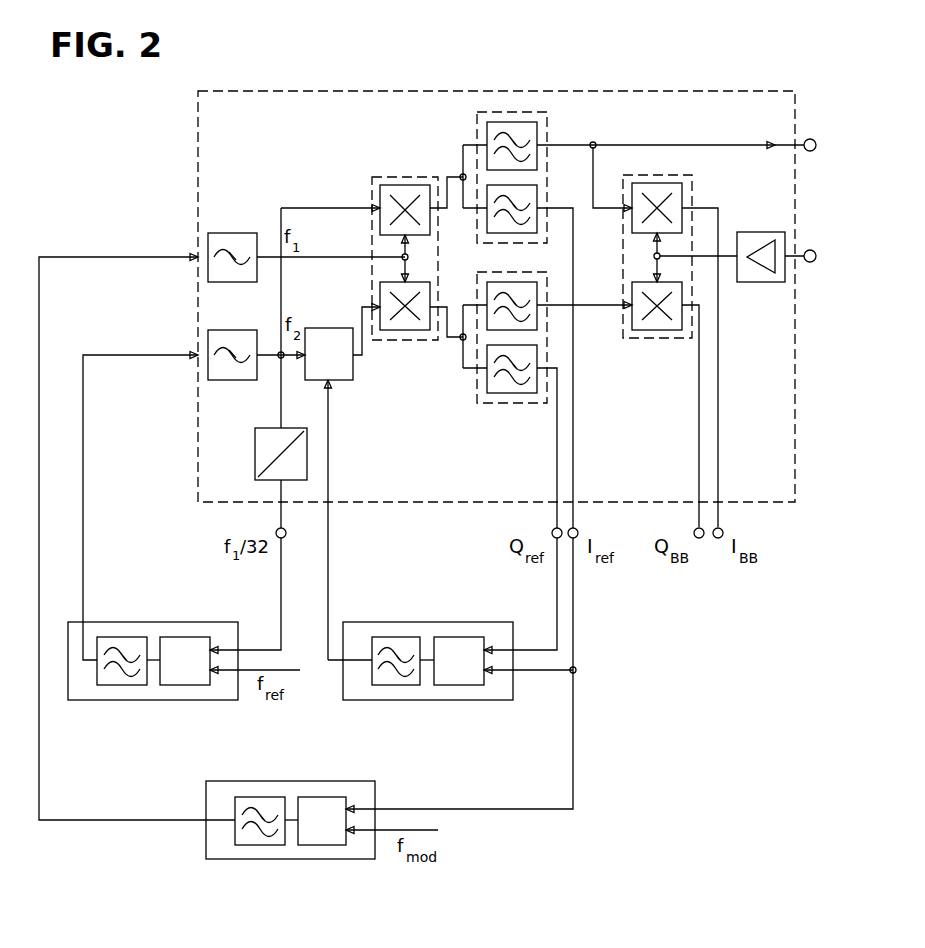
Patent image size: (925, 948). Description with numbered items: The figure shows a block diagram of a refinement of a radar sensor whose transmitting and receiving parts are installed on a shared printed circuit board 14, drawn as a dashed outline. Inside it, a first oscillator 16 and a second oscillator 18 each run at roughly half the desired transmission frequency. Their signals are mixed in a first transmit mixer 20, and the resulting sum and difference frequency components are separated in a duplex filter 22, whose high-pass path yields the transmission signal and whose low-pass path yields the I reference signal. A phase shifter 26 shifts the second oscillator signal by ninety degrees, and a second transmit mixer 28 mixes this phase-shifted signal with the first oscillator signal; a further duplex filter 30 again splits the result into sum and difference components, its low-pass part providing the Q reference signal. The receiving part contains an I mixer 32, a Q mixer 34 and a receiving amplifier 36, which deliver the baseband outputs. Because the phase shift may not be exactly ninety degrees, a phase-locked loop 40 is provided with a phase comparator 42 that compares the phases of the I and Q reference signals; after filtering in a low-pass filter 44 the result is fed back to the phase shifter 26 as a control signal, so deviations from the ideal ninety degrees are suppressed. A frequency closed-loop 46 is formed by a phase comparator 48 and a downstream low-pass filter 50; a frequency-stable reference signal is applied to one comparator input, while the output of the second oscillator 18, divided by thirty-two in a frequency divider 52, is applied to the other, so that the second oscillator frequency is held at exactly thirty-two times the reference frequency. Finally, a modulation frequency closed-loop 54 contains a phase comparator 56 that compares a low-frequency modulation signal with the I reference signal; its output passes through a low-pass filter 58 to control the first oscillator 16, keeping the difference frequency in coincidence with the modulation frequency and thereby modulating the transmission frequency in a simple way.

The printed circuit board 14 is at (708, 91).
The first oscillator 16 is at (230, 233).
The second oscillator 18 is at (230, 382).
The first transmit mixer 20 is at (402, 177).
The duplex filter 22 is at (510, 112).
The phase shifter 26 is at (345, 382).
The second transmit mixer 28 is at (404, 340).
The further duplex filter 30 is at (512, 403).
The I mixer 32 is at (635, 235).
The Q mixer 34 is at (636, 332).
The receiving amplifier 36 is at (758, 282).
The phase-locked loop 40 is at (423, 694).
The phase comparator 42 is at (463, 685).
The low-pass filter 44 is at (398, 685).
The frequency closed-loop 46 is at (149, 694).
The phase comparator 48 is at (190, 685).
The low-pass filter 50 is at (125, 685).
The frequency divider 52 is at (255, 463).
The modulation frequency closed-loop 54 is at (285, 852).
The phase comparator 56 is at (327, 845).
The low-pass filter 58 is at (261, 845).